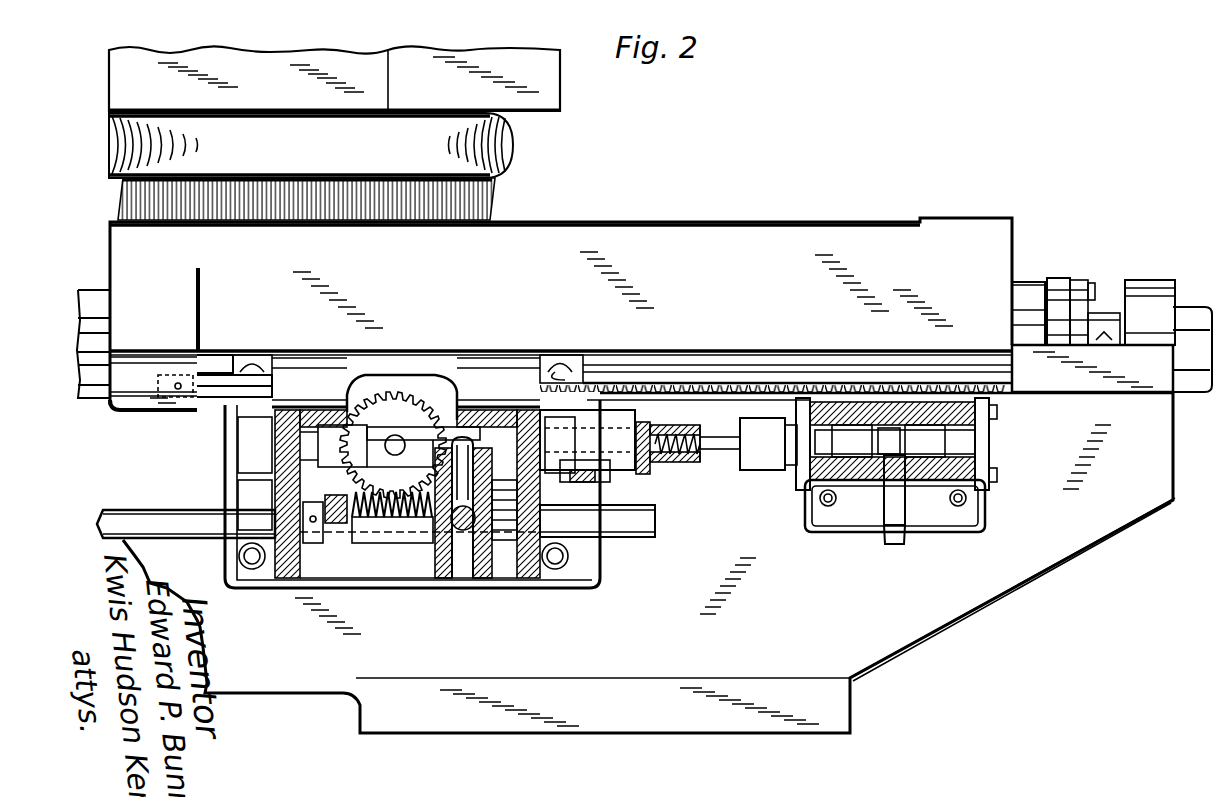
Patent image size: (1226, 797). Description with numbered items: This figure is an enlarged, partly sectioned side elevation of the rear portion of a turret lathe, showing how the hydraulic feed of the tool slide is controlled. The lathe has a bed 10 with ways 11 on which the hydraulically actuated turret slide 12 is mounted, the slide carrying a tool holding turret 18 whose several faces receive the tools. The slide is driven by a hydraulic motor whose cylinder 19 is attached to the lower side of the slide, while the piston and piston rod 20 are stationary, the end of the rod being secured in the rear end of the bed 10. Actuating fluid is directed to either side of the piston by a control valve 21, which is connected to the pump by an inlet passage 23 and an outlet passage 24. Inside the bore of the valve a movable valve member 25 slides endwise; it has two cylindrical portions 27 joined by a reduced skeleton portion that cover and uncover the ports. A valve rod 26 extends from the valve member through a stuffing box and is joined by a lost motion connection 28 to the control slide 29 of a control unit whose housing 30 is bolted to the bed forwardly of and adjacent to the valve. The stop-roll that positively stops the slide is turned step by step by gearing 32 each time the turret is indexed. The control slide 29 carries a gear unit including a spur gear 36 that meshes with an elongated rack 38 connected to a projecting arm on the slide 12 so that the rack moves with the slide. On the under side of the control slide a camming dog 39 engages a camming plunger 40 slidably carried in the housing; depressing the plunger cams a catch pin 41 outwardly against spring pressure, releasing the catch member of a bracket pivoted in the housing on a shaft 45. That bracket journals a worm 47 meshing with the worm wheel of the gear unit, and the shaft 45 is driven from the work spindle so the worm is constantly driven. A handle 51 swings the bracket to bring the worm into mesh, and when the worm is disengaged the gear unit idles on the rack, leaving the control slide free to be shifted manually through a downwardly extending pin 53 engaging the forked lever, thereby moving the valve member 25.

The bed 10 is at (1040, 552).
The ways 11 is at (1025, 290).
The turret slide 12 is at (706, 233).
The tool holding turret 18 is at (552, 78).
The cylinder 19 is at (1048, 282).
The piston and piston rod 20 is at (1100, 318).
The control valve 21 is at (865, 480).
The inlet passage 23 is at (905, 500).
The outlet passage 24 is at (905, 540).
The movable valve member 25 is at (985, 437).
The valve rod 26 is at (715, 450).
The cylindrical portions 27 is at (888, 441).
The lost motion connection 28 is at (690, 472).
The control slide 29 is at (653, 470).
The housing 30 is at (288, 590).
The gearing 32 is at (600, 482).
The spur gear 36 is at (420, 425).
The rack 38 is at (725, 378).
The camming dog 39 is at (402, 449).
The camming plunger 40 is at (480, 450).
The catch pin 41 is at (462, 565).
The shaft 45 is at (207, 538).
The worm 47 is at (383, 530).
The handle 51 is at (345, 500).
The pin 53 is at (590, 440).